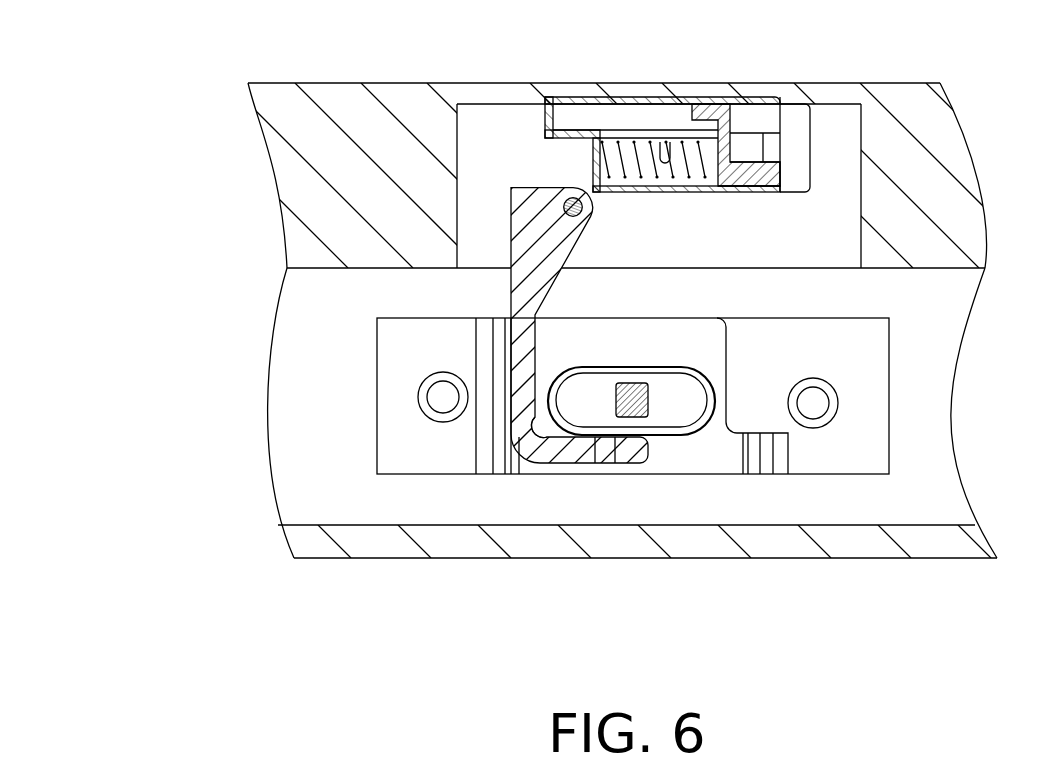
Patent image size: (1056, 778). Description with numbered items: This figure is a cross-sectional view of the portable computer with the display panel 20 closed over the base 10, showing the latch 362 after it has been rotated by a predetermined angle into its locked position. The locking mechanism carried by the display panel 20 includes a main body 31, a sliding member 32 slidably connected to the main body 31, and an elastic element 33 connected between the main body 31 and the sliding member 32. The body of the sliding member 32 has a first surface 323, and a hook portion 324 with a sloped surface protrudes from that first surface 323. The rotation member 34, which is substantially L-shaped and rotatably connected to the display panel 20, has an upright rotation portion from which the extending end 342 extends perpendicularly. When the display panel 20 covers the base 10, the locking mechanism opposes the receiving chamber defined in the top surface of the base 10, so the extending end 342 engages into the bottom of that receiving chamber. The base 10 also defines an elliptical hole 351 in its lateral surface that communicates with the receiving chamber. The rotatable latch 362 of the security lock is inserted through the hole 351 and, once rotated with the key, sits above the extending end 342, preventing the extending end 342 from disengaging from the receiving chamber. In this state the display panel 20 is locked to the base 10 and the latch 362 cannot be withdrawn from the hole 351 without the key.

The base 10 is at (328, 398).
The display panel 20 is at (914, 180).
The main body 31 is at (565, 100).
The sliding member 32 is at (705, 104).
The first surface 323 is at (748, 168).
The hook portion 324 is at (775, 168).
The elastic element 33 is at (631, 145).
The rotation member 34 is at (532, 267).
The hole 351 is at (560, 434).
The extending end 342 is at (586, 452).
The latch 362 is at (637, 407).